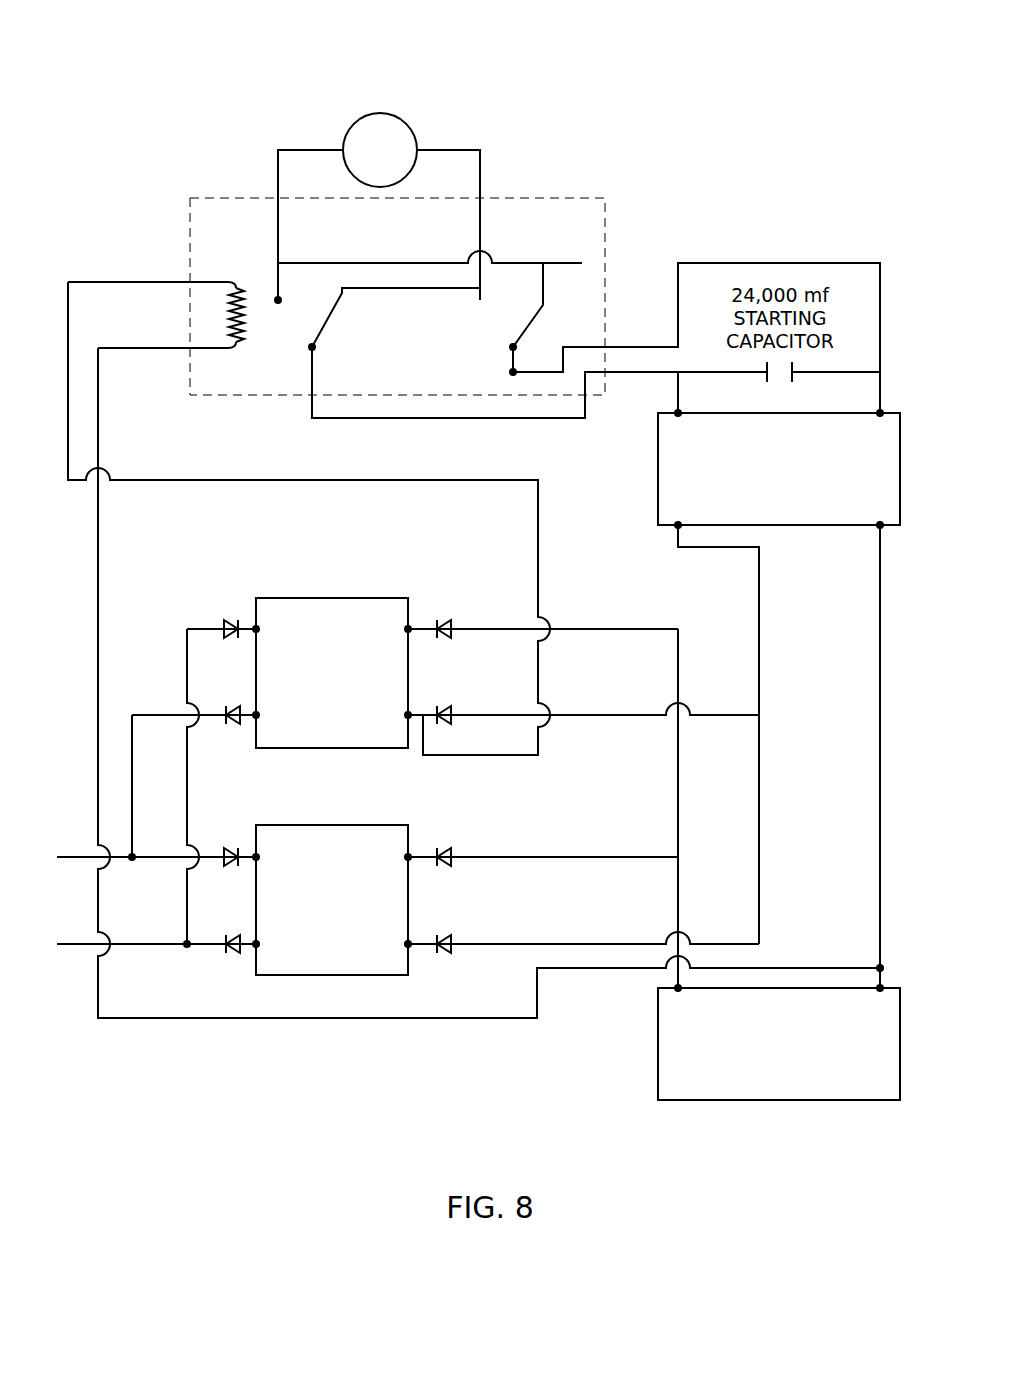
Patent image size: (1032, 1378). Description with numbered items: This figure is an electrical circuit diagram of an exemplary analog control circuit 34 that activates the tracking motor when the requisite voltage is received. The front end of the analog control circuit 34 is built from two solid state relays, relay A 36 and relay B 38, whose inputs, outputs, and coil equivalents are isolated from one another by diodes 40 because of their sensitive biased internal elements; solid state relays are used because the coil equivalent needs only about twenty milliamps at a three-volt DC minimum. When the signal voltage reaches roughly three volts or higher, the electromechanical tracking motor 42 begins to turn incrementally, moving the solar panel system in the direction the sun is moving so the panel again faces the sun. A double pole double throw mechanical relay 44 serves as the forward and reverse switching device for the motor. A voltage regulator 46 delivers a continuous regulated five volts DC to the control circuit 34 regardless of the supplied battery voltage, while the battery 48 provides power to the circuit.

The analog control circuit 34 is at (122, 58).
The relay A 36 is at (388, 900).
The relay B 38 is at (444, 772).
The diodes 40 is at (450, 620).
The electromechanical tracking motor 42 is at (415, 135).
The double pole double throw (DPDT) mechanical relay 44 is at (633, 185).
The voltage regulator 46 is at (905, 448).
The battery 48 is at (858, 1075).